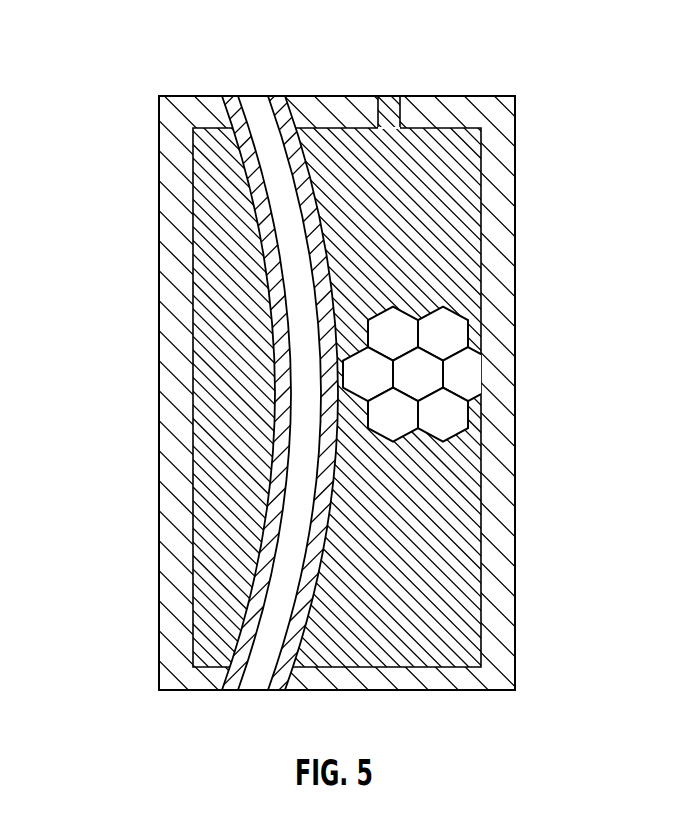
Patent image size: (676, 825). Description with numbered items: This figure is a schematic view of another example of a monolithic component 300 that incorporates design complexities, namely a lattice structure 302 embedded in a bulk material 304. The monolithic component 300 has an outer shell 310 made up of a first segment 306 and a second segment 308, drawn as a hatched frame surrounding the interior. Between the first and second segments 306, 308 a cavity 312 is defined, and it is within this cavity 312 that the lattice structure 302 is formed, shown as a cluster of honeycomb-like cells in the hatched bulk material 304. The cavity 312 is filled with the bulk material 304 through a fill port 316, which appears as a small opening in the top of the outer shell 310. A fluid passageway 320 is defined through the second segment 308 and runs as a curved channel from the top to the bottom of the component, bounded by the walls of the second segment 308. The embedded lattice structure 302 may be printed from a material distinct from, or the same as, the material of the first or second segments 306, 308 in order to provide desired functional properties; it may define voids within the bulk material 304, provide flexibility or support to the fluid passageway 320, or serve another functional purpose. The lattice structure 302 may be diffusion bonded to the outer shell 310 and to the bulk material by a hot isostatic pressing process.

The monolithic component 300 is at (105, 53).
The lattice structure 302 is at (470, 412).
The bulk material 304 is at (450, 592).
The first segment 306 is at (455, 105).
The second segment 308 is at (233, 99).
The outer shell 310 is at (141, 153).
The cavity 312 is at (212, 350).
The fill port 316 is at (389, 104).
The fluid passageway 320 is at (268, 140).